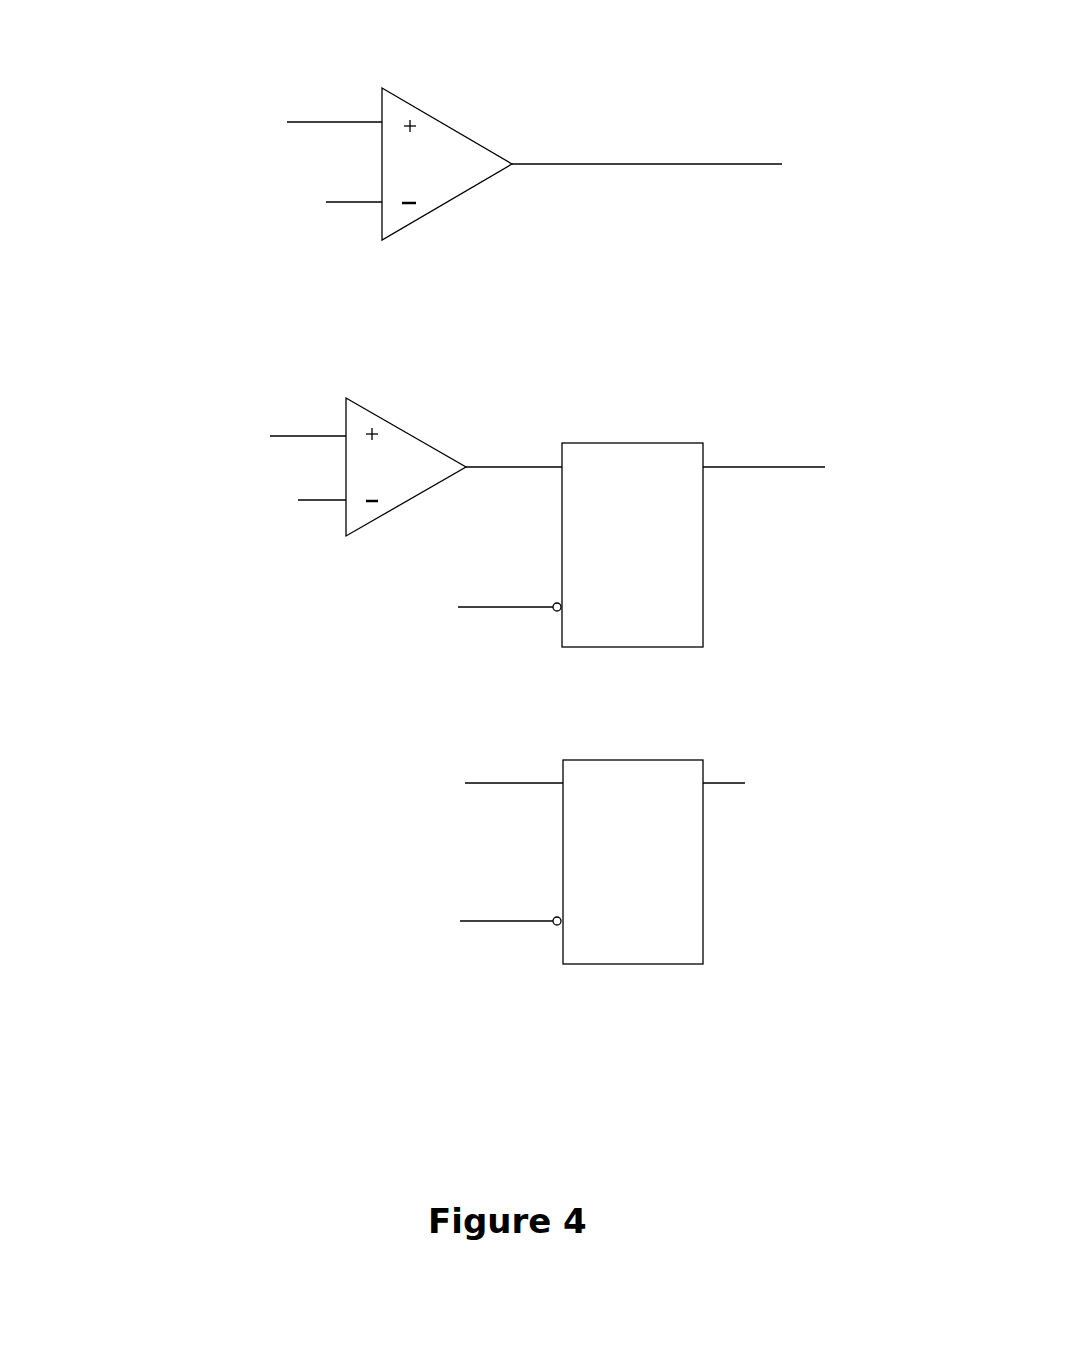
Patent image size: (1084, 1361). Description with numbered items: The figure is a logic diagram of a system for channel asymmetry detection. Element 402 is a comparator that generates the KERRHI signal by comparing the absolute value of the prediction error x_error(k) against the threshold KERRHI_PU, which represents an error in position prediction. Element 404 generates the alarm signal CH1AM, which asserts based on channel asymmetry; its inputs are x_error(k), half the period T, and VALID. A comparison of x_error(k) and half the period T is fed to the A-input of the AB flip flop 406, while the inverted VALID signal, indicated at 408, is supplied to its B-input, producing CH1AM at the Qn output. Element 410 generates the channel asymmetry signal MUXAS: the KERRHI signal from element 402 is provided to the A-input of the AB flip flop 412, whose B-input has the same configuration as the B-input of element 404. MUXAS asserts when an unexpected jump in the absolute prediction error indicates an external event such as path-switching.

The element generating KERRHI signal 402 is at (98, 98).
The element generating alarm signal CH1AM 404 is at (107, 369).
The AB flip flop 406 is at (628, 443).
The VALID input 408 is at (455, 575).
The element generating channel asymmetry signal MUXAS 410 is at (103, 767).
The AB flip flop 412 is at (638, 760).